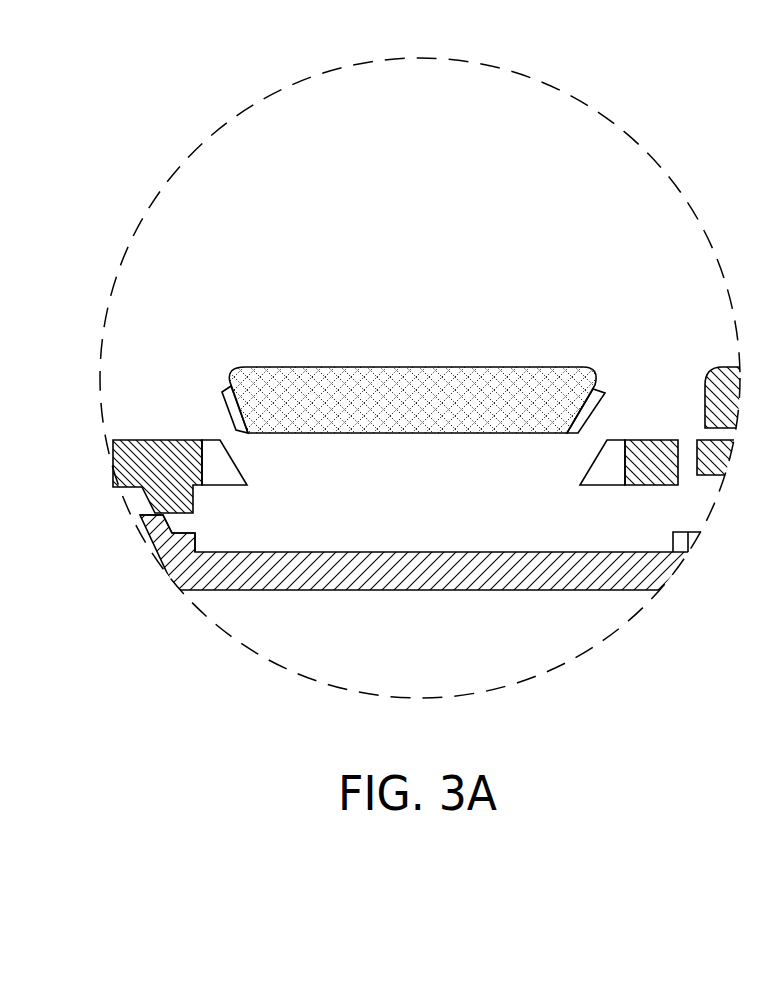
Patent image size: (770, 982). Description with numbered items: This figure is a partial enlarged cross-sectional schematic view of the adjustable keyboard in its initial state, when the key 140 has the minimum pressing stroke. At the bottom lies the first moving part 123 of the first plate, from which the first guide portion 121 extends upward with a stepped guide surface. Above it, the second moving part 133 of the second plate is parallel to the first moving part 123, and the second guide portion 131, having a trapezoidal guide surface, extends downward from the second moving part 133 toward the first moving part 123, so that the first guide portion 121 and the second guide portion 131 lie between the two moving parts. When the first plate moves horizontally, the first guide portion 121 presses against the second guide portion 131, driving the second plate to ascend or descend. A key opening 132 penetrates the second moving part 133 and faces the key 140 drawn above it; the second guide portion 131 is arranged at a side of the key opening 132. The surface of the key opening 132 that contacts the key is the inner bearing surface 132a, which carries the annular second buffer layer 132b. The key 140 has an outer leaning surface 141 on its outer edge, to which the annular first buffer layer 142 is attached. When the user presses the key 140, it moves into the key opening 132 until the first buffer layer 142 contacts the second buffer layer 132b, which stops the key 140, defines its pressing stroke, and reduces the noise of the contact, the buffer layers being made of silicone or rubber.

The first guide portion 121 is at (155, 533).
The first moving part 123 is at (568, 575).
The second guide portion 131 is at (158, 497).
The key opening 132 is at (582, 452).
The inner bearing surface 132a is at (225, 479).
The second buffer layer 132b is at (212, 468).
The second moving part 133 is at (650, 440).
The key 140 is at (418, 380).
The outer leaning surface 141 is at (230, 408).
The first buffer layer 142 is at (227, 392).